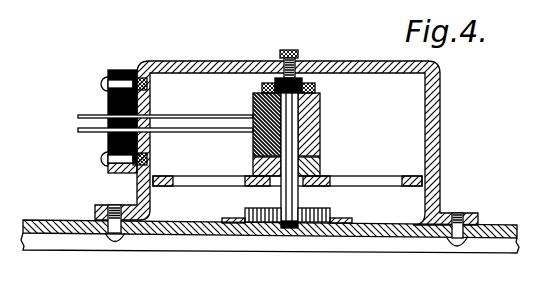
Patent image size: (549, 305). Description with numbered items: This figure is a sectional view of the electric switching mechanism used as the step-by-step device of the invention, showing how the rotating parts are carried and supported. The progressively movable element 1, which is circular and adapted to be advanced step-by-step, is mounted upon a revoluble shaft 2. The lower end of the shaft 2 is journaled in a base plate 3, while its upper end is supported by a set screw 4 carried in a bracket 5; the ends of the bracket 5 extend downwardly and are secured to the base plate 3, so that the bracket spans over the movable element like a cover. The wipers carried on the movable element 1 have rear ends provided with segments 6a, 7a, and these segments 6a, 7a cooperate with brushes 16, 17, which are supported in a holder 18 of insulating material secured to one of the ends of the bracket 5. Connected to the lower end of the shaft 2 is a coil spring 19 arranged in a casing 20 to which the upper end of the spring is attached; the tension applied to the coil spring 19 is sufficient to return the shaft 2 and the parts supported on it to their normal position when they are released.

The progressively movable element 1 is at (408, 177).
The revoluble shaft 2 is at (297, 201).
The base plate 3 is at (356, 232).
The set screw 4 is at (296, 74).
The bracket 5 is at (366, 66).
The segment 6a is at (308, 118).
The segment 7a is at (305, 131).
The brush 16 is at (212, 108).
The brush 17 is at (210, 133).
The holder 18 is at (107, 143).
The coil spring 19 is at (318, 224).
The casing 20 is at (330, 221).